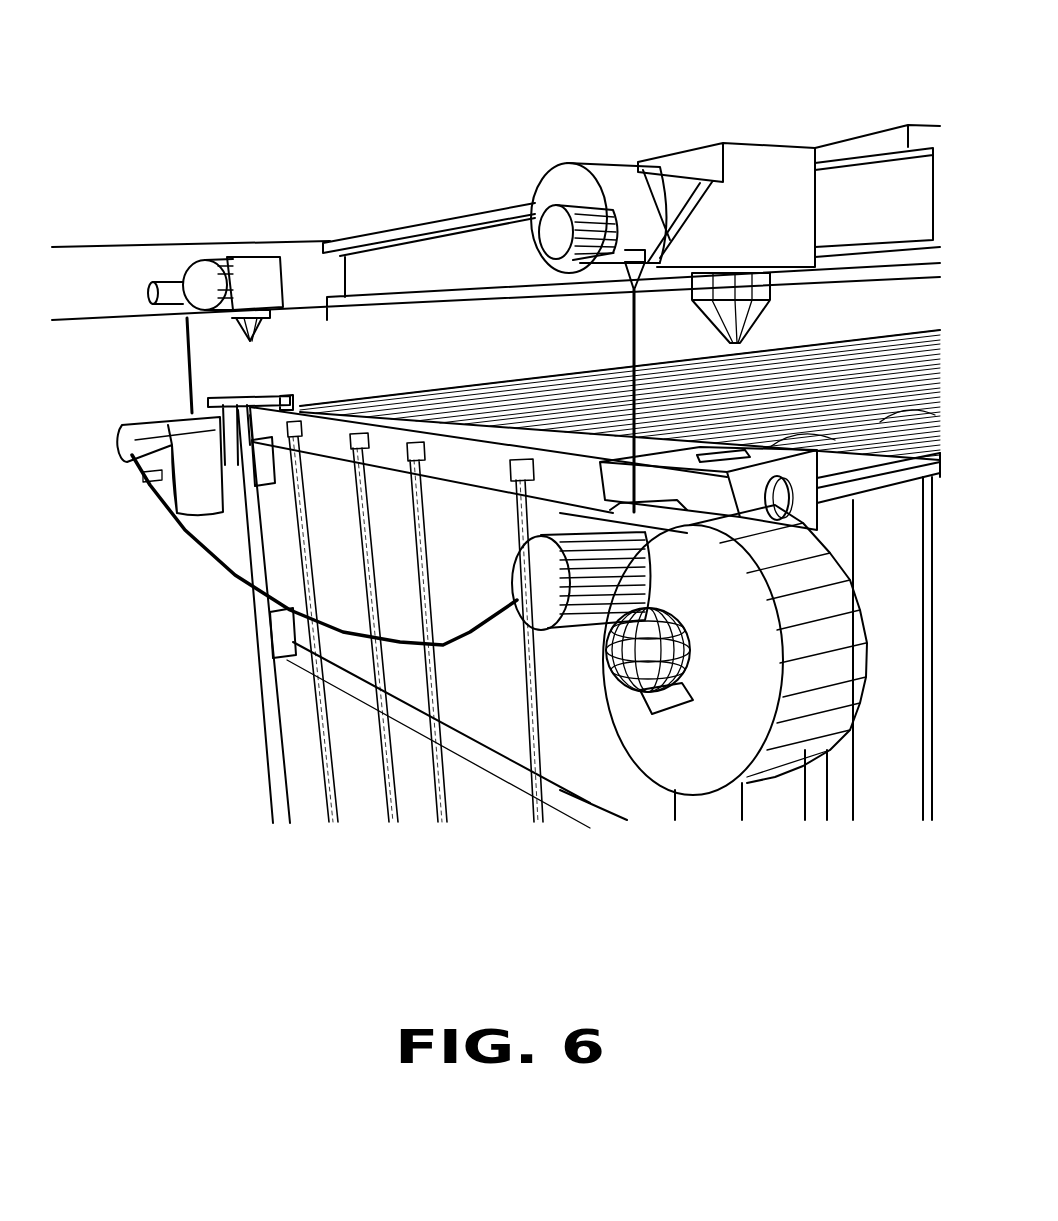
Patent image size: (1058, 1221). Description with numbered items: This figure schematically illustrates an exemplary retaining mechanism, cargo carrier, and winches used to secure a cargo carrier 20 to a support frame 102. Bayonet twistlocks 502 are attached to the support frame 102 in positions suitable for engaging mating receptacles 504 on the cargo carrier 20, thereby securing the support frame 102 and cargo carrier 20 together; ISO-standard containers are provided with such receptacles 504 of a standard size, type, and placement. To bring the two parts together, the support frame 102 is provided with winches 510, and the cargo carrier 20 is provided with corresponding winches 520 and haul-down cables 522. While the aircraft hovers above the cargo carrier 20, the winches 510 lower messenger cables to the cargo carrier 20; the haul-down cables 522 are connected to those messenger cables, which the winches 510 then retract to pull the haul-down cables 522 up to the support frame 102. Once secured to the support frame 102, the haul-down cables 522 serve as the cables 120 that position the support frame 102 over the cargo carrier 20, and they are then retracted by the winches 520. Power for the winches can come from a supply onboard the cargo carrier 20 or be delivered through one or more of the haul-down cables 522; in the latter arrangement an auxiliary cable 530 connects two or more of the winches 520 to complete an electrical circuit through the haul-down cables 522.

The cargo carrier 20 is at (243, 775).
The support frame 102 is at (398, 228).
The cables 120 is at (356, 312).
The haul-down cables 522 is at (180, 360).
The bayonet twistlocks 502 is at (260, 330).
The receptacles 504 is at (253, 390).
The winches 510 is at (183, 266).
The winches 520 is at (117, 445).
The auxiliary cable 530 is at (220, 575).